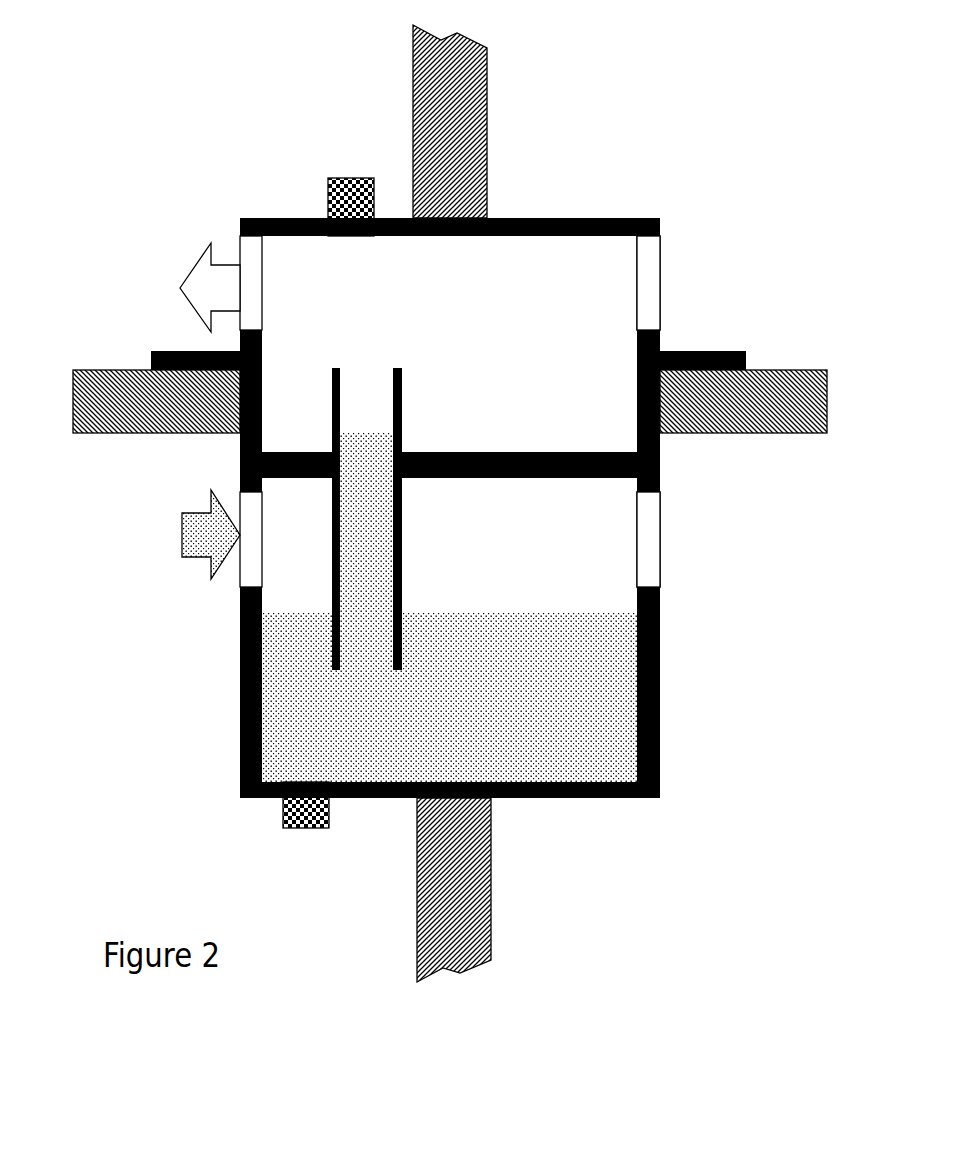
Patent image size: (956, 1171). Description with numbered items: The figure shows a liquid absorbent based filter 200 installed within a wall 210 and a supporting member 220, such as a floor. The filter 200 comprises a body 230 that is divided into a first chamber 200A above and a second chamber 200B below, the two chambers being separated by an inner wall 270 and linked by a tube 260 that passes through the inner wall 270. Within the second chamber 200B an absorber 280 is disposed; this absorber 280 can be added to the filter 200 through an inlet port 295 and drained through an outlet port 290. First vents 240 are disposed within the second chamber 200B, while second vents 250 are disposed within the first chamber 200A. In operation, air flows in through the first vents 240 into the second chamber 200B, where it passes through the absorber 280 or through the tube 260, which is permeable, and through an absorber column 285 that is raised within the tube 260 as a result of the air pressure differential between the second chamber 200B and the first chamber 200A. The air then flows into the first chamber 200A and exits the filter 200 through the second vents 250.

The liquid absorbent based filter 200 is at (418, 508).
The first chamber 200A is at (334, 287).
The second chamber 200B is at (388, 534).
The wall 210 is at (493, 118).
The supporting member 220 is at (752, 410).
The body 230 is at (283, 218).
The first vents 240 is at (651, 541).
The second vents 250 is at (650, 300).
The tube 260 is at (371, 400).
The inner wall 270 is at (544, 448).
The absorber 280 is at (610, 727).
The absorber column 285 is at (383, 558).
The outlet port 290 is at (287, 838).
The inlet port 295 is at (348, 165).